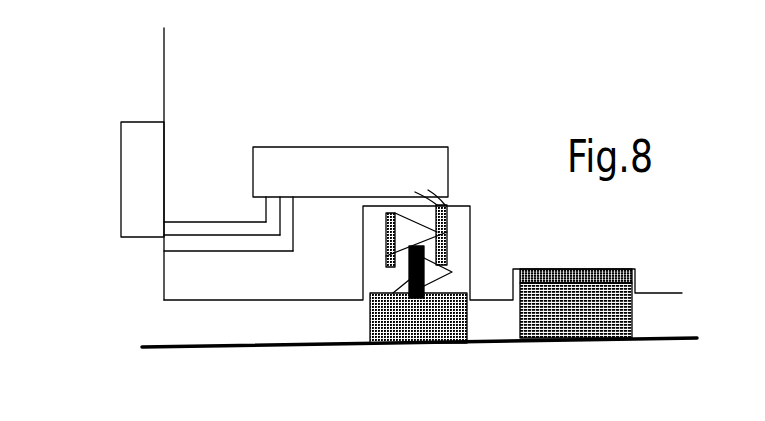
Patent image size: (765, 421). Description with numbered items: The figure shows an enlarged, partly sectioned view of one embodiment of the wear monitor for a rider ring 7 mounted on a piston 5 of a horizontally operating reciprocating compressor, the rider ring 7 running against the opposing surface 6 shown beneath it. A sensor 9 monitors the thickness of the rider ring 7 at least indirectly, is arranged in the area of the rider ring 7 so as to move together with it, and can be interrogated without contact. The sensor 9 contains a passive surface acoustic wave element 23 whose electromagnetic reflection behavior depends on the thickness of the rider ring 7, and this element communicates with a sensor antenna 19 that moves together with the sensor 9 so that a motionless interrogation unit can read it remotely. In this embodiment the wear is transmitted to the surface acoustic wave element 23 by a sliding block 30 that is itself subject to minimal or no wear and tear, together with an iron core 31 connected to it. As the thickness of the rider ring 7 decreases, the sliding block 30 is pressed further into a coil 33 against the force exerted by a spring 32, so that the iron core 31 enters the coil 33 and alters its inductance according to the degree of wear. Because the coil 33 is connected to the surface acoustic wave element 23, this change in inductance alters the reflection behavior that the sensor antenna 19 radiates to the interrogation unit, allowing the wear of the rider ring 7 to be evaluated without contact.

The sensor antenna 19 is at (126, 155).
The surface acoustic wave element 23 is at (322, 181).
The sensor 9 is at (463, 154).
The sliding block 30 is at (425, 330).
The spring 32 is at (386, 256).
The iron core 31 is at (425, 255).
The coil 33 is at (452, 205).
The piston 5 is at (653, 291).
The rider ring 7 is at (612, 328).
The ground / road surface 6 is at (666, 341).